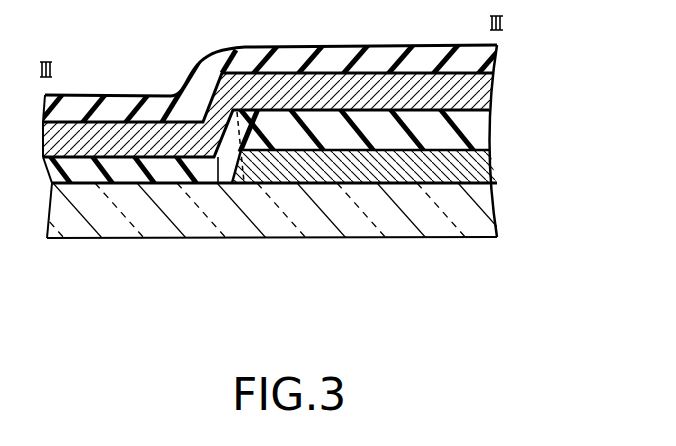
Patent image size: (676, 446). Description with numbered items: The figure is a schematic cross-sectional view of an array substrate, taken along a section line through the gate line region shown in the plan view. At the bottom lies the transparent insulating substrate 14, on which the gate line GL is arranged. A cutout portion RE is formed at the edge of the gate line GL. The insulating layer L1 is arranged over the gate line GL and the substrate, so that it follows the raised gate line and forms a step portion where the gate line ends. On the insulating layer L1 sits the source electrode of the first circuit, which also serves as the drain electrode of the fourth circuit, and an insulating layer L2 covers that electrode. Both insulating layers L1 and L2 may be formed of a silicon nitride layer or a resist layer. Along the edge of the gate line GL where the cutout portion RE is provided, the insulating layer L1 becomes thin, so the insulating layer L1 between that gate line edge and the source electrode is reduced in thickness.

The insulating layer L2 is at (483, 58).
The insulating layer L1 is at (483, 125).
The gate line GL is at (483, 165).
The transparent insulating substrate 14 is at (482, 208).
The cutout portion RE is at (218, 183).